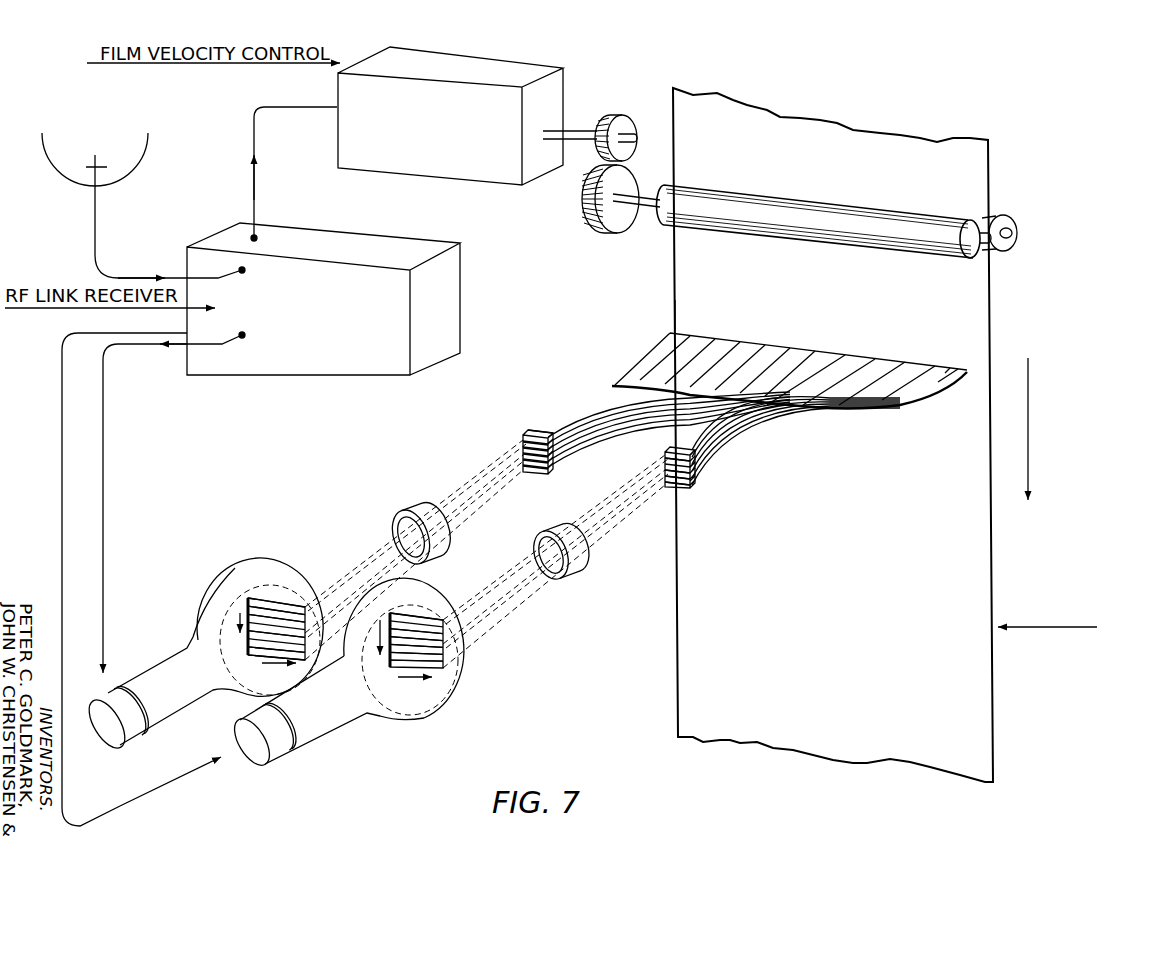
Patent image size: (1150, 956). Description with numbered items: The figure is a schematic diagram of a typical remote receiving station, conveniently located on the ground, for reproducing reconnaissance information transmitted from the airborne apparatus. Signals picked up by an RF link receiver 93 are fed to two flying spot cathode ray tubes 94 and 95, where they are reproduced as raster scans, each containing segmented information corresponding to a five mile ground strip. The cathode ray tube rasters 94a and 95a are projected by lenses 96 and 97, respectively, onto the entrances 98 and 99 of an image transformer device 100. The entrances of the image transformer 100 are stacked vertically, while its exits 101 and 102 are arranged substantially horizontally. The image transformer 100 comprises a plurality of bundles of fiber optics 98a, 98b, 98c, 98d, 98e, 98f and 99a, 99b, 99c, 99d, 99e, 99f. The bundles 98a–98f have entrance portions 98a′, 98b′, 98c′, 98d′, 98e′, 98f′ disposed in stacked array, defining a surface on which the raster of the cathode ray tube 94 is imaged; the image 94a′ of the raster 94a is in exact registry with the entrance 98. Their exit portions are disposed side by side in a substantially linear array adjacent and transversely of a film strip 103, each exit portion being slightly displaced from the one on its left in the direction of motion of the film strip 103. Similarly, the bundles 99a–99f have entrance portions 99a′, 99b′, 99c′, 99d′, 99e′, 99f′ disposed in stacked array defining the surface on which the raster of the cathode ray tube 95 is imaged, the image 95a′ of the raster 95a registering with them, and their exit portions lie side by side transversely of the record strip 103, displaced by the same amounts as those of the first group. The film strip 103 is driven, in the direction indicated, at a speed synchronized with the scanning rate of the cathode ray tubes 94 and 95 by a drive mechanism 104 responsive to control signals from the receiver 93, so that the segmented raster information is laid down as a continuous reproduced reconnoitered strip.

The RF link receiver 93 is at (258, 356).
The flying spot cathode ray tube 94 is at (190, 649).
The cathode ray tube raster 94a is at (278, 600).
The image of the raster 94a′ is at (533, 437).
The flying spot cathode ray tube 95 is at (287, 735).
The cathode ray tube raster 95a is at (381, 664).
The image of the raster 95a′ is at (687, 489).
The lens 96 is at (412, 510).
The lens 97 is at (540, 535).
The entrance of image transformer 98 is at (518, 480).
The bundle of fiber optics 98a is at (640, 376).
The bundle of fiber optics 98b is at (664, 389).
The bundle of fiber optics 98c is at (682, 378).
The bundle of fiber optics 98d is at (708, 360).
The bundle of fiber optics 98e is at (705, 345).
The bundle of fiber optics 98f is at (740, 398).
The entrance portion 98a′ is at (535, 474).
The entrance portion 98b′ is at (523, 465).
The entrance portion 98c′ is at (523, 453).
The entrance portion 98d′ is at (553, 461).
The entrance portion 98e′ is at (523, 448).
The entrance portion 98f′ is at (523, 440).
The entrance of image transformer 99 is at (695, 497).
The bundle of fiber optics 99a is at (778, 393).
The bundle of fiber optics 99b is at (798, 393).
The bundle of fiber optics 99c is at (817, 394).
The bundle of fiber optics 99d is at (868, 382).
The bundle of fiber optics 99e is at (880, 387).
The bundle of fiber optics 99f is at (940, 378).
The entrance portion 99a′ is at (665, 483).
The entrance portion 99b′ is at (665, 477).
The entrance portion 99c′ is at (665, 471).
The entrance portion 99d′ is at (667, 454).
The entrance portion 99e′ is at (693, 468).
The entrance portion 99f′ is at (693, 449).
The image transformer device 100 is at (855, 490).
The exit of image transformer 101 is at (686, 312).
The exit of image transformer 102 is at (955, 350).
The film strip 103 is at (992, 455).
The drive mechanism 104 is at (476, 168).